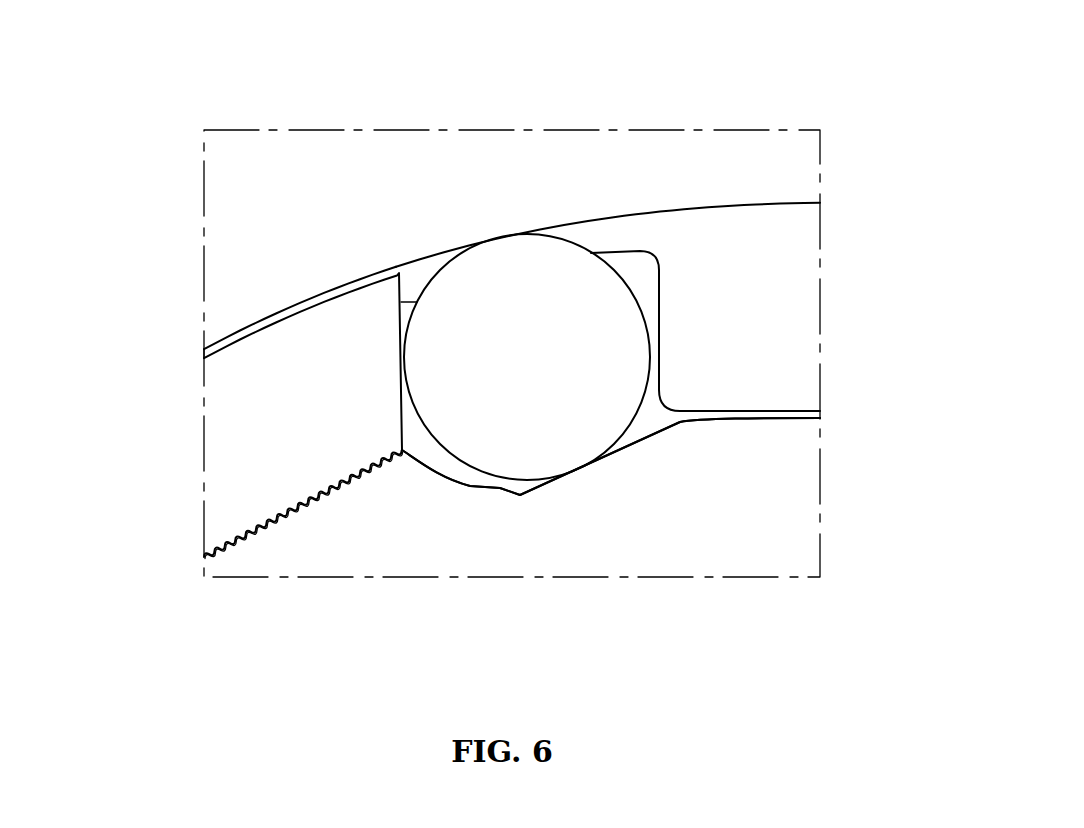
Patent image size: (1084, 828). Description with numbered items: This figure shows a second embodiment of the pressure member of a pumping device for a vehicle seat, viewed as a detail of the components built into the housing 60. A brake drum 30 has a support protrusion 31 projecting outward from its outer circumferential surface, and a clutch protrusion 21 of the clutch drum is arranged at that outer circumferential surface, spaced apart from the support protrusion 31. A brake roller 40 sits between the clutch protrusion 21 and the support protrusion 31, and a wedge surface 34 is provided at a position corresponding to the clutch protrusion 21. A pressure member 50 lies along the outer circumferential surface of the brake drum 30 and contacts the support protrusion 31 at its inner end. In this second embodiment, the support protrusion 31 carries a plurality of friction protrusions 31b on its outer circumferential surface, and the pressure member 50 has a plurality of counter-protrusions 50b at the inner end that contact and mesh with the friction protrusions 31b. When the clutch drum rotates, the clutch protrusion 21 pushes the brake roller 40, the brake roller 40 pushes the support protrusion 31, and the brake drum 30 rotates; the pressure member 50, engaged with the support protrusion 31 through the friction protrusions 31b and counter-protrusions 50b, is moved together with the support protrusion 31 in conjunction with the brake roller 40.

The housing 60 is at (477, 175).
The brake roller 40 is at (527, 300).
The clutch protrusion 21 is at (762, 323).
The pressure member 50 is at (272, 387).
The counter-protrusion 50b is at (270, 510).
The friction protrusion 31b is at (258, 523).
The brake drum 30 is at (598, 530).
The support protrusion 31 is at (353, 487).
The wedge surface 34 is at (652, 438).